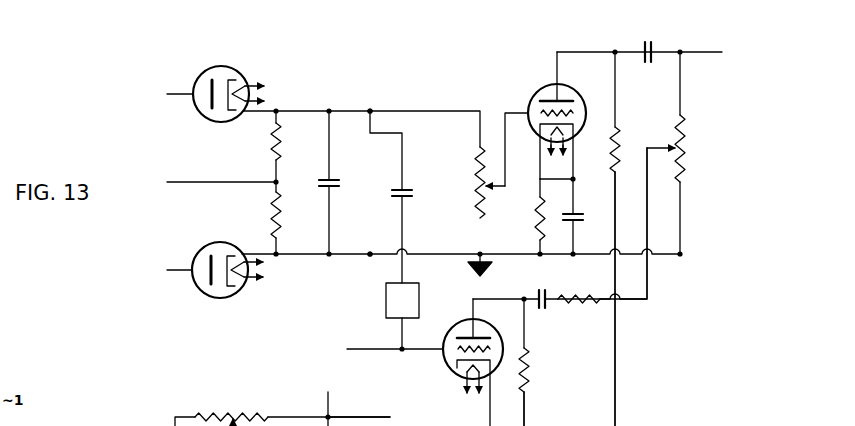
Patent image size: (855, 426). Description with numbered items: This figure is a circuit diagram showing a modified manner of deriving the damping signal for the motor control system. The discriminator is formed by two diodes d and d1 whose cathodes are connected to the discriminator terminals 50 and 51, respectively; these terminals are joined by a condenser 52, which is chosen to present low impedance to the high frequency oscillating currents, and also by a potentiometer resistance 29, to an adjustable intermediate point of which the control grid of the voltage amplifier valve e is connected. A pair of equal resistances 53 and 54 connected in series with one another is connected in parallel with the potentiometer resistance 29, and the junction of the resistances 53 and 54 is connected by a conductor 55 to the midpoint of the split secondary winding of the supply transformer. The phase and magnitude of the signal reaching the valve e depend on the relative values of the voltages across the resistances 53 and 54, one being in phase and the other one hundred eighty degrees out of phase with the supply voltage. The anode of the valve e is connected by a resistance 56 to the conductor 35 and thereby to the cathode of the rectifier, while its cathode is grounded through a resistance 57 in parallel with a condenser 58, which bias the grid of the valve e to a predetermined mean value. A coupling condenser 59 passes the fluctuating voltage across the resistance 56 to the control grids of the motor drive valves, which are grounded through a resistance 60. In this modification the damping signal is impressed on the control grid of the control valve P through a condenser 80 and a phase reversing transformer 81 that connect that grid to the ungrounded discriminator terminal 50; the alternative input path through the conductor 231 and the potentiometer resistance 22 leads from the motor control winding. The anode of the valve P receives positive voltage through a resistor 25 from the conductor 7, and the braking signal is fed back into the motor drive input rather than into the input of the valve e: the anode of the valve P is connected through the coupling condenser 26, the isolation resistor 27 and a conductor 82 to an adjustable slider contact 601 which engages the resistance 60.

The diode d is at (228, 66).
The diode d1 is at (226, 242).
The voltage amplifier valve e is at (541, 88).
The control valve P is at (457, 322).
The resistance 53 is at (270, 147).
The resistance 54 is at (270, 217).
The conductor 55 is at (204, 181).
The condenser 52 is at (318, 183).
The discriminator terminal 50 is at (370, 110).
The discriminator terminal 51 is at (369, 253).
The condenser 80 is at (392, 193).
The potentiometer resistance 29 is at (477, 186).
The phase reversing transformer 81 is at (386, 295).
The coupling condenser 59 is at (646, 41).
The resistance 56 is at (609, 150).
The resistance 60 is at (687, 150).
The adjustable slider contact 601 is at (670, 148).
The resistance 57 is at (536, 216).
The condenser 58 is at (583, 217).
The conductor 82 is at (650, 276).
The coupling condenser 26 is at (542, 289).
The isolation resistor 27 is at (578, 303).
The resistor 25 is at (530, 370).
The conductor 35 is at (618, 357).
The conductor 7 is at (526, 416).
The potentiometer resistance 22 is at (233, 412).
The conductor 231 is at (358, 416).